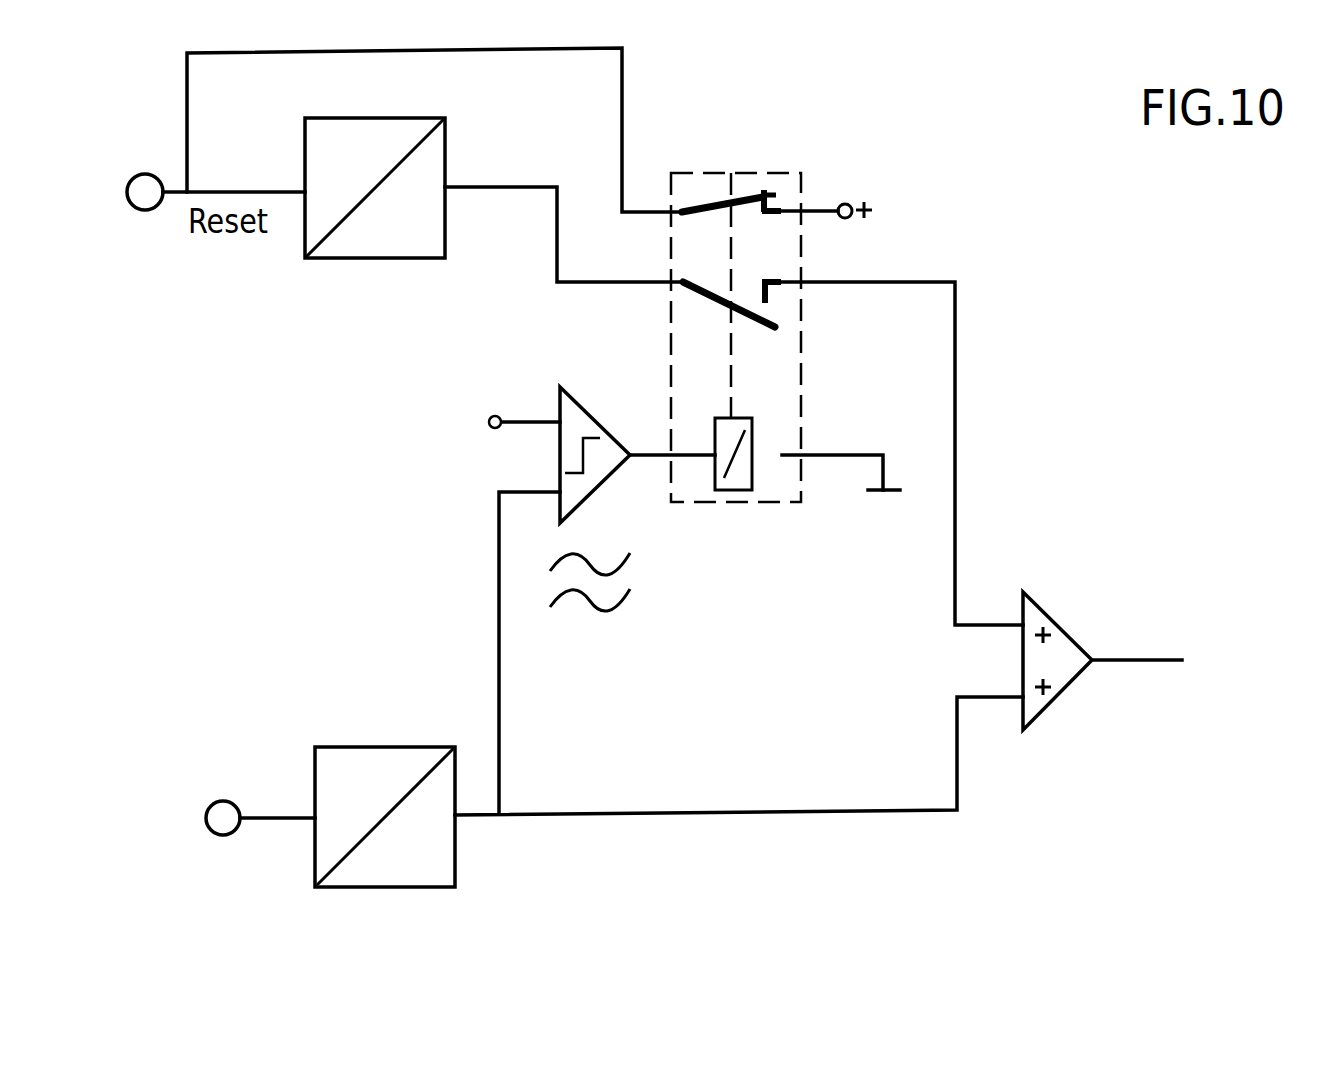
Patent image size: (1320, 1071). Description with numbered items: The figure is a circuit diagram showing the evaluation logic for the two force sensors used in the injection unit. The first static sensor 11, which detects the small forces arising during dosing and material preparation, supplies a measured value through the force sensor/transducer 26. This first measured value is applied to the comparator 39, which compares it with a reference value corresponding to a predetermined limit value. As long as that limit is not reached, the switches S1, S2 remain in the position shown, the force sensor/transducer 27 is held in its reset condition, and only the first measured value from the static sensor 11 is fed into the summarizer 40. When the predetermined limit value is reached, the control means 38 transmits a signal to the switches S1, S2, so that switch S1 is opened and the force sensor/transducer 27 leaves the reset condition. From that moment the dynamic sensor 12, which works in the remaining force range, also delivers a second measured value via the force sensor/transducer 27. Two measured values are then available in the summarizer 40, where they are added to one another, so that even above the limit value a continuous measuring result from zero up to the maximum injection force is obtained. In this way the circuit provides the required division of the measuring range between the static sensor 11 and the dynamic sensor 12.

The first static sensor 11 is at (222, 800).
The dynamic sensor 12 is at (145, 210).
The force sensor/transducer 26 is at (378, 772).
The force sensor/transducer 27 is at (322, 212).
The control means 38 is at (749, 299).
The comparator 39 is at (597, 458).
The summarizer 40 is at (1063, 653).
The switch S1 is at (715, 202).
The switch S2 is at (713, 293).